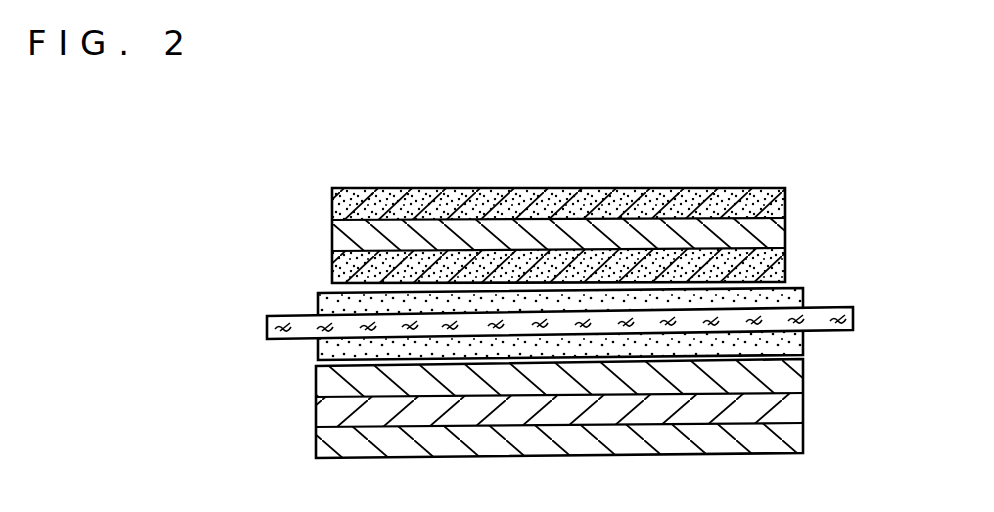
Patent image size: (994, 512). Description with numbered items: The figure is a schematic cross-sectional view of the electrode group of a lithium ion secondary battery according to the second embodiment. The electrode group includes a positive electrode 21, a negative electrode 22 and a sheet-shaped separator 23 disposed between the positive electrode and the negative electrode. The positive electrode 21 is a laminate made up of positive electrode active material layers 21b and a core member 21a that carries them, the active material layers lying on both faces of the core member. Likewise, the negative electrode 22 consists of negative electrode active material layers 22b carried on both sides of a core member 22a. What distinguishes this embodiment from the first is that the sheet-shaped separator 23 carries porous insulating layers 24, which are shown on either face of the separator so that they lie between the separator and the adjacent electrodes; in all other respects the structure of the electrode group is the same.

The positive electrode 21 is at (627, 227).
The core member 21a is at (757, 232).
The positive electrode active material layers 21b is at (773, 197).
The negative electrode 22 is at (627, 422).
The core member 22a is at (788, 410).
The negative electrode active material layers 22b is at (788, 380).
The sheet-shaped separator 23 is at (853, 318).
The porous insulating layers 24 is at (800, 295).